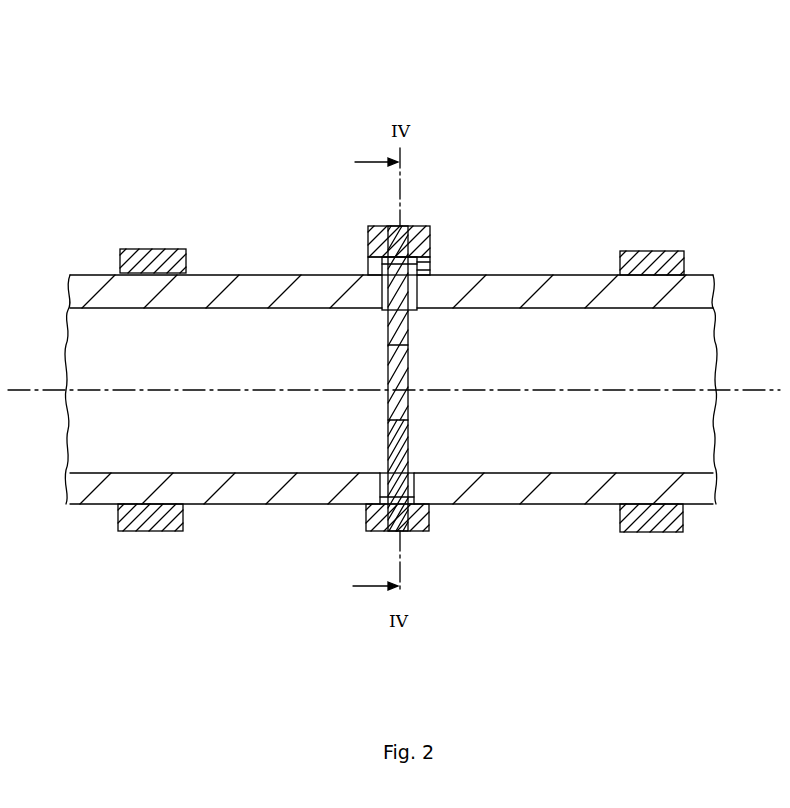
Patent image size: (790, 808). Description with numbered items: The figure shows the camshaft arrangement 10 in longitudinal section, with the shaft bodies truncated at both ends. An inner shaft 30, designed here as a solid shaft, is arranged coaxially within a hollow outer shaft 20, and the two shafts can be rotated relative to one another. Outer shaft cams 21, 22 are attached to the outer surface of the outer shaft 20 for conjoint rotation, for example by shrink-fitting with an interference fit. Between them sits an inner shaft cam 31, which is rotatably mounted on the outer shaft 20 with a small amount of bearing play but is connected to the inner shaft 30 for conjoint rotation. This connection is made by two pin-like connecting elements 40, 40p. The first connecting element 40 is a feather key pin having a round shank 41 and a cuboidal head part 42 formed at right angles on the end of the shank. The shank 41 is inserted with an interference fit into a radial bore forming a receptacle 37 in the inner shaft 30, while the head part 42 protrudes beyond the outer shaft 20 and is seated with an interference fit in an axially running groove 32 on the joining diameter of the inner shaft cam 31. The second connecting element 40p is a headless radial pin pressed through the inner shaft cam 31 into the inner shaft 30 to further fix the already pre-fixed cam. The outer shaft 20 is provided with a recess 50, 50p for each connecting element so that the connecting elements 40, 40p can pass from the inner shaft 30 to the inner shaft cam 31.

The camshaft arrangement 10 is at (557, 87).
The outer shaft 20 is at (262, 280).
The outer shaft cam 21 is at (147, 248).
The outer shaft cam element 22 is at (650, 251).
The inner shaft 30 is at (255, 462).
The inner shaft cam 31 is at (368, 228).
The groove 32 is at (368, 263).
The receptacle 37 is at (408, 412).
The first connecting element 40 is at (390, 361).
The second connecting element 40p is at (410, 458).
The shank 41 is at (410, 346).
The head part 42 is at (431, 266).
The recess in outer shaft 50 is at (415, 306).
The recess in outer shaft 50p is at (385, 474).